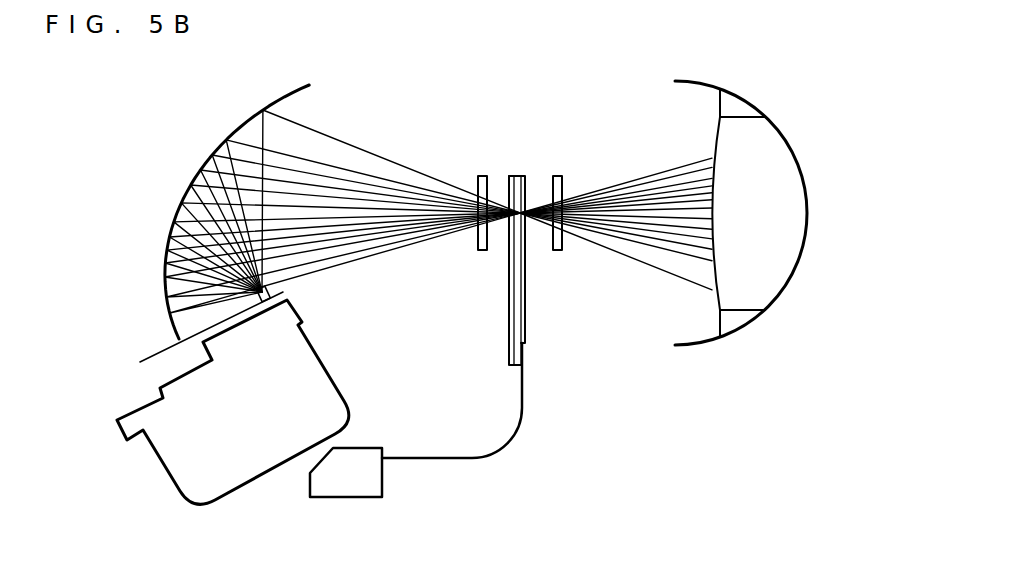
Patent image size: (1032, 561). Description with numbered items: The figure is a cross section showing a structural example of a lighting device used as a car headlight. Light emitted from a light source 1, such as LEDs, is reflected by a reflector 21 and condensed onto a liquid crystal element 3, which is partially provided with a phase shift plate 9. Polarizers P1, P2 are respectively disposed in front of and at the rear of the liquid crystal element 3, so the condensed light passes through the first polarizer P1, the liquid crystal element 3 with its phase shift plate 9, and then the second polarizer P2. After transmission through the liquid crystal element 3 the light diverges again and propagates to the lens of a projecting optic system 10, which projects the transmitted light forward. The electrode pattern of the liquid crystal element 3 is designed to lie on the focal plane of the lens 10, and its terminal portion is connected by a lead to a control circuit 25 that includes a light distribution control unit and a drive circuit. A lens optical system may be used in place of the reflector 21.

The light source 1 is at (316, 349).
The reflector 21 is at (177, 212).
The polarizer P1 is at (482, 174).
The phase shift plate 9 is at (520, 174).
The polarizer P2 is at (558, 174).
The liquid crystal element 3 is at (526, 306).
The lens of projecting optic system 10 is at (786, 291).
The control circuit 25 is at (382, 478).